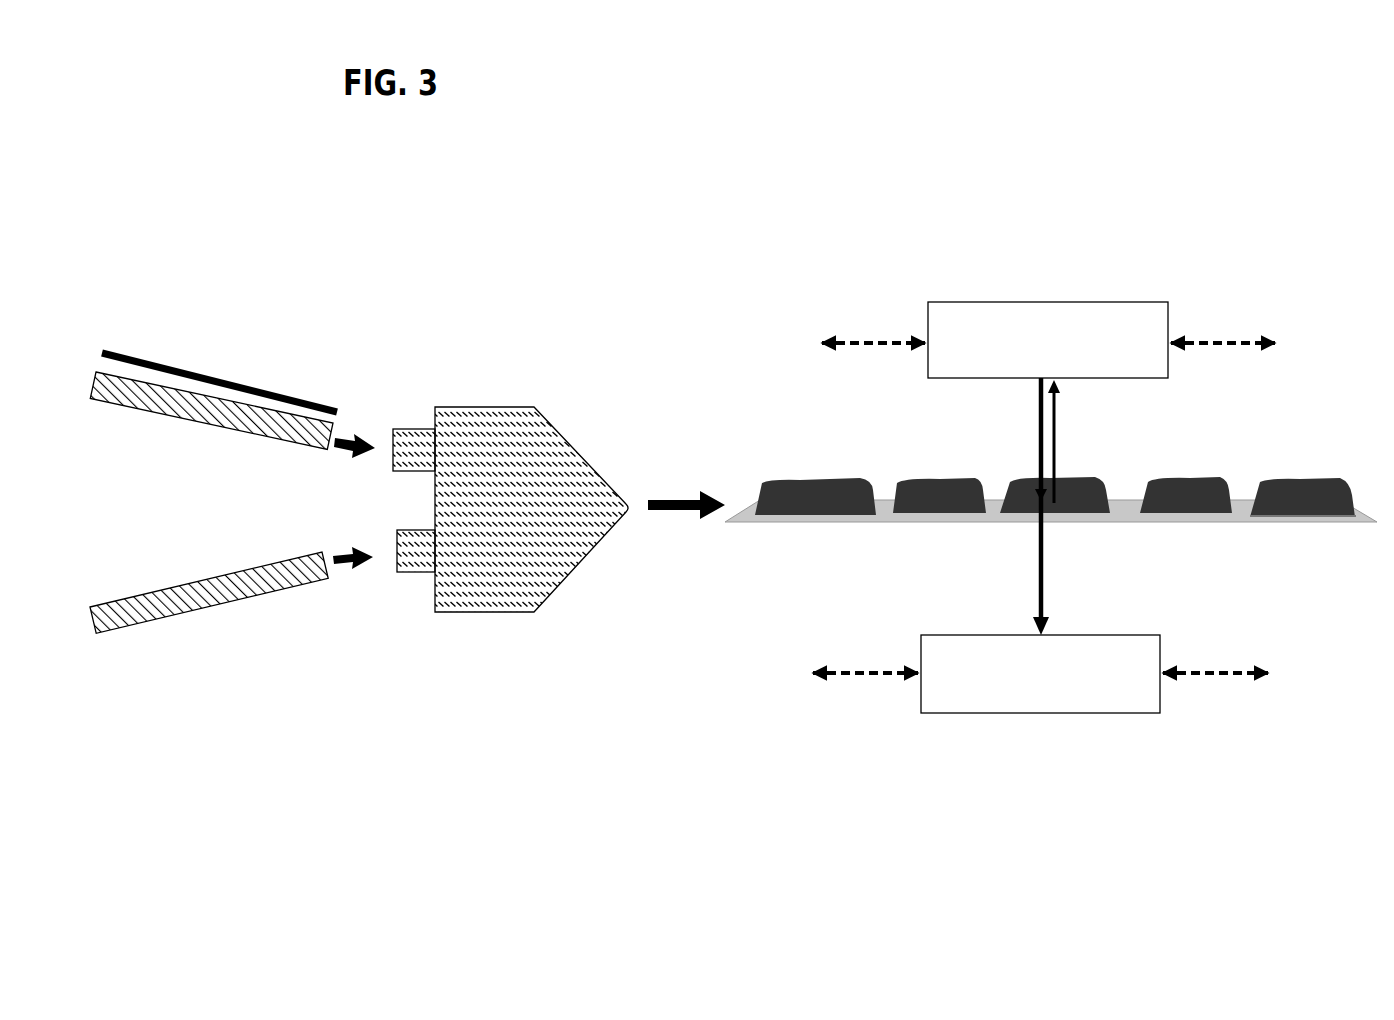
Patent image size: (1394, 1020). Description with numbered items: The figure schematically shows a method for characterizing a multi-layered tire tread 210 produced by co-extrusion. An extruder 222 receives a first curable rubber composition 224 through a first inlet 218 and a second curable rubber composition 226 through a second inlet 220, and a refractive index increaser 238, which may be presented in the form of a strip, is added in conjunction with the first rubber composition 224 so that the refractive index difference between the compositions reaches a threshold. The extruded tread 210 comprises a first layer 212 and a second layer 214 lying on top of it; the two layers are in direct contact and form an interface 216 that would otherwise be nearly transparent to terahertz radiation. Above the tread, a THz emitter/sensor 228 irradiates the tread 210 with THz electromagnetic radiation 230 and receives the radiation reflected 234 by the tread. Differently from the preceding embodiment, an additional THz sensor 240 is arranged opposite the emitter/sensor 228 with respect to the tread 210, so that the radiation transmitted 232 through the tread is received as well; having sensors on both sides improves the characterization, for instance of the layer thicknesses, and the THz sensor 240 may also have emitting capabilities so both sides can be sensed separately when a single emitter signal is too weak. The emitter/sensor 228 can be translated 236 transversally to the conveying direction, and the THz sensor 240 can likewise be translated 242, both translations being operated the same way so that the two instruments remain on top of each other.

The multi-layered tire tread 210 is at (1020, 569).
The first layer 212 is at (1167, 517).
The second layer 214 is at (1277, 500).
The interface 216 is at (1292, 513).
The first inlet 218 is at (425, 425).
The second inlet 220 is at (416, 572).
The extruder 222 is at (537, 377).
The first curable rubber composition 224 is at (212, 333).
The second curable rubber composition 226 is at (205, 623).
The THz emitter/sensor 228 is at (1050, 302).
The THz electromagnetic radiation 230 is at (1040, 408).
The transmitted radiation 232 is at (1040, 550).
The reflected radiation 234 is at (1058, 447).
The translation 236 is at (872, 343).
The refractive index increaser 238 is at (132, 353).
The THz sensor 240 is at (1032, 713).
The translation 242 is at (872, 672).